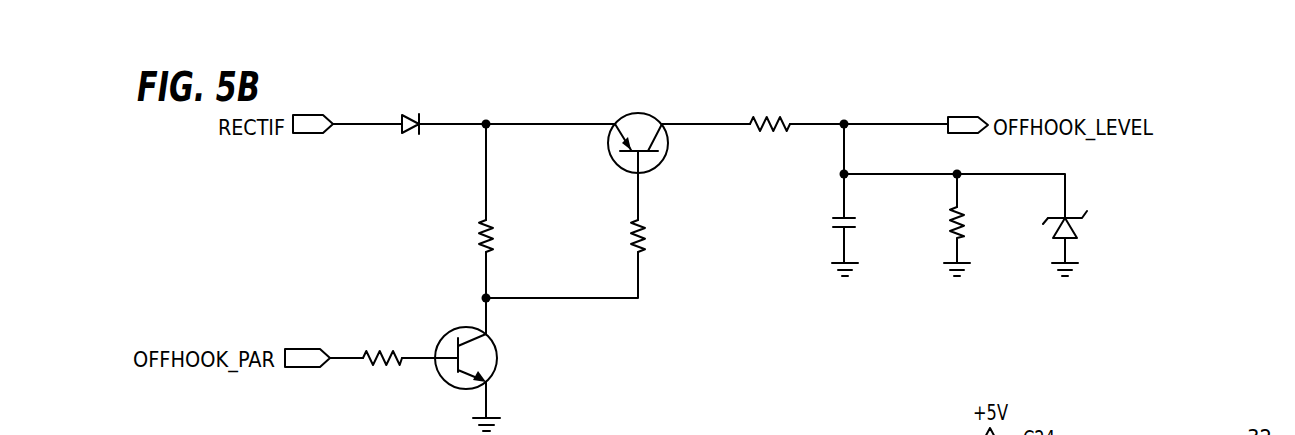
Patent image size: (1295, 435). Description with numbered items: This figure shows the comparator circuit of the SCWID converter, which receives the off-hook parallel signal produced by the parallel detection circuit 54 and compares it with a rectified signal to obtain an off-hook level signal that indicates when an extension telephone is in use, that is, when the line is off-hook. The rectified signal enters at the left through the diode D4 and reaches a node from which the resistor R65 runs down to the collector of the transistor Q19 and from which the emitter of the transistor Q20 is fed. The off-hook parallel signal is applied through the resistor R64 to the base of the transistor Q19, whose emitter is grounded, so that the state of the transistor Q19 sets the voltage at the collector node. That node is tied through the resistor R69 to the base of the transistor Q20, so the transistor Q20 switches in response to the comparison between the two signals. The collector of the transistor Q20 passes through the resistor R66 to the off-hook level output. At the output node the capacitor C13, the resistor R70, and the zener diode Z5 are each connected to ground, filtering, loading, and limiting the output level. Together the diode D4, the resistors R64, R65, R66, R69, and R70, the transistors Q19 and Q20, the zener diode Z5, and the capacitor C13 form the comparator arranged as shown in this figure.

The parallel detection circuit 54 is at (1207, 159).
The diode D4 is at (410, 112).
The transistor Q20 is at (616, 151).
The resistor R66 is at (770, 113).
The resistor R65 is at (503, 236).
The resistor R69 is at (655, 236).
The capacitor C13 is at (862, 240).
The resistor R70 is at (975, 235).
The zener diode Z5 is at (1072, 237).
The resistor R64 is at (382, 346).
The transistor Q19 is at (478, 358).